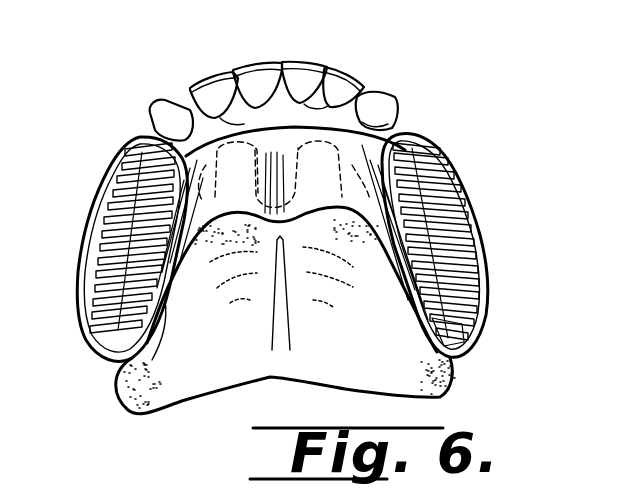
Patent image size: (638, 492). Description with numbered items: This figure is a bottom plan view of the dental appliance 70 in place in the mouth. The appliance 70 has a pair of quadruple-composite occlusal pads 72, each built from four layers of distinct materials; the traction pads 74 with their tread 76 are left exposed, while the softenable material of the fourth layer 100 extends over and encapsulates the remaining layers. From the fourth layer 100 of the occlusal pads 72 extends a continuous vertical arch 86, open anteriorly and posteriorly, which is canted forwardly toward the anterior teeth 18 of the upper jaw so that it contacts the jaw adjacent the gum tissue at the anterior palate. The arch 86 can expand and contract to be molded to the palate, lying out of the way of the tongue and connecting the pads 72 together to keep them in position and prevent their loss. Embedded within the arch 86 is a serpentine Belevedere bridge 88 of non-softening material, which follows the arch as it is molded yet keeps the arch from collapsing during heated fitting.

The anterior teeth 18 is at (307, 63).
The dental appliance 70 is at (477, 199).
The occlusal pads 72 is at (448, 332).
The traction pads 74 is at (480, 318).
The tread 76 is at (472, 223).
The arch 86 is at (110, 392).
The serpentine Belevedere bridge 88 is at (216, 66).
The fourth layer 100 is at (282, 63).